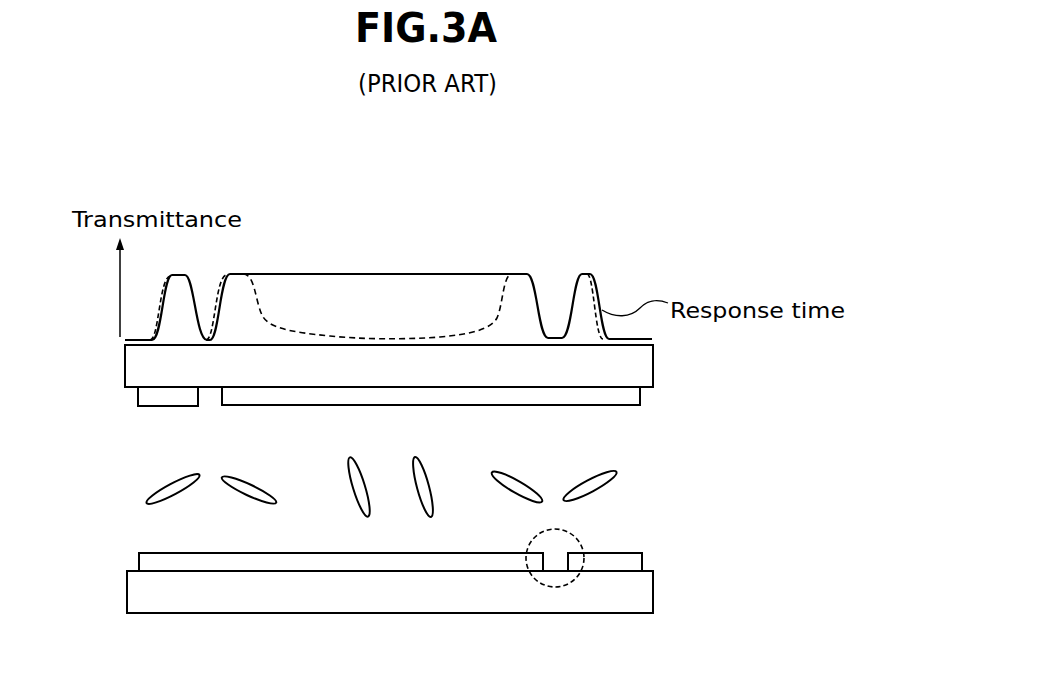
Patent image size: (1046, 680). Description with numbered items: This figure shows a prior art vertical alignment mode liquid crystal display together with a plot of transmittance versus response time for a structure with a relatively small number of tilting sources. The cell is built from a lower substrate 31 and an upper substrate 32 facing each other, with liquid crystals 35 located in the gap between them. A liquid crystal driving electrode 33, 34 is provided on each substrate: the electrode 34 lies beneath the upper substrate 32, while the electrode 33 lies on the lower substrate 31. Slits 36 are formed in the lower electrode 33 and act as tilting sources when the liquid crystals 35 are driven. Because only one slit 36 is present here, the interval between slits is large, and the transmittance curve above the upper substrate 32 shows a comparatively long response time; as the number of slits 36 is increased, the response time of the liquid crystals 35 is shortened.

The lower substrate 31 is at (643, 593).
The upper substrate 32 is at (640, 366).
The liquid crystal driving electrode 33 is at (632, 562).
The liquid crystal driving electrode 34 is at (630, 397).
The liquid crystals 35 is at (617, 472).
The slits 36 is at (577, 540).